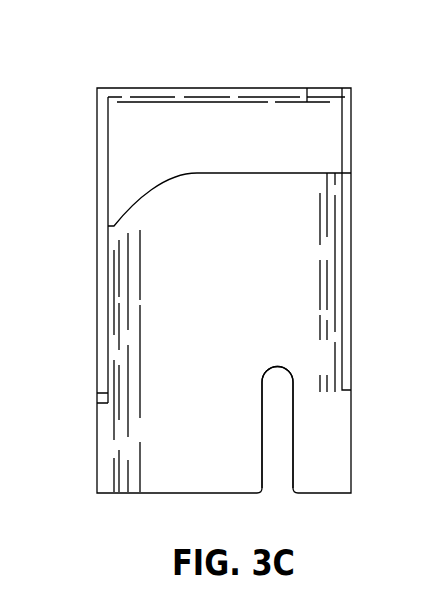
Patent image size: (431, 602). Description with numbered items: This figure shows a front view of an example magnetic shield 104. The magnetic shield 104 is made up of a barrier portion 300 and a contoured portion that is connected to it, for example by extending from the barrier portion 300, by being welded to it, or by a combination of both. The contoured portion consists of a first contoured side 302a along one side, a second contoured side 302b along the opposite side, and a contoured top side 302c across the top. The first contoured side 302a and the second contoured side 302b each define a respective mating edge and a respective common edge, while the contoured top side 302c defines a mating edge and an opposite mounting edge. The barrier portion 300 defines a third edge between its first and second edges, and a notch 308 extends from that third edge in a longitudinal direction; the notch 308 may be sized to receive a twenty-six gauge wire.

The magnetic shield 104 is at (108, 98).
The barrier portion 300 is at (277, 265).
The first contoured side 302a is at (108, 358).
The second contoured side 302b is at (340, 358).
The contoured top side 302c is at (222, 108).
The notch 308 is at (280, 438).